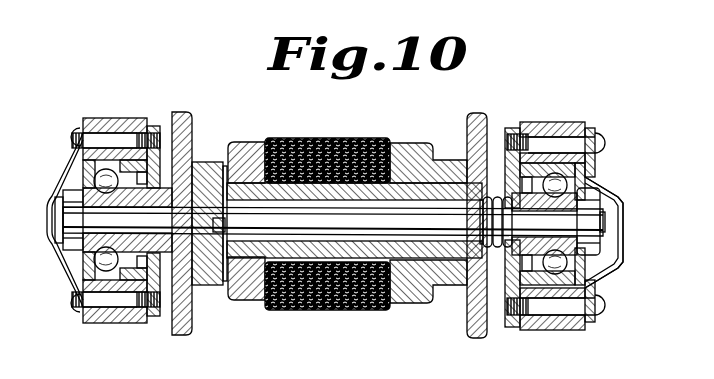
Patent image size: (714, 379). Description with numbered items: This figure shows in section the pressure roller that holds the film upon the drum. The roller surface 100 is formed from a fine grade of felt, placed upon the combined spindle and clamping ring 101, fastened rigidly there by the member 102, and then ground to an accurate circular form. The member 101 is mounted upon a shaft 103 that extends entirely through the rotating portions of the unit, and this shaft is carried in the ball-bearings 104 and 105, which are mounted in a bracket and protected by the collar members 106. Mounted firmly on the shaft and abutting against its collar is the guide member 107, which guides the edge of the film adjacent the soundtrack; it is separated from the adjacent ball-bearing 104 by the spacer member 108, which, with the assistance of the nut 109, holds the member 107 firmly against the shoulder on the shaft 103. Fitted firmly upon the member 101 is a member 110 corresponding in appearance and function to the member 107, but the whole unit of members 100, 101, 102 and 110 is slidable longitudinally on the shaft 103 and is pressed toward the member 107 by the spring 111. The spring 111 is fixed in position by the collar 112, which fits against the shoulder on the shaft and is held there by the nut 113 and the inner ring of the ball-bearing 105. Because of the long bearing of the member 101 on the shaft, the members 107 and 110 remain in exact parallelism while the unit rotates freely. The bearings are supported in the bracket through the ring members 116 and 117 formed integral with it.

The roller surface 100 is at (330, 138).
The combined spindle and clamping ring 101 is at (422, 143).
The member 102 is at (244, 142).
The shaft 103 is at (422, 305).
The ball-bearing 104 is at (82, 272).
The ball-bearing 105 is at (602, 171).
The collar members 106 is at (68, 172).
The guide member 107 is at (186, 116).
The spacer member 108 is at (168, 256).
The nut 109 is at (63, 243).
The member 110 is at (477, 113).
The spring 111 is at (493, 247).
The collar 112 is at (494, 197).
The nut 113 is at (600, 198).
The ring member 116 is at (550, 122).
The ring member 117 is at (128, 107).